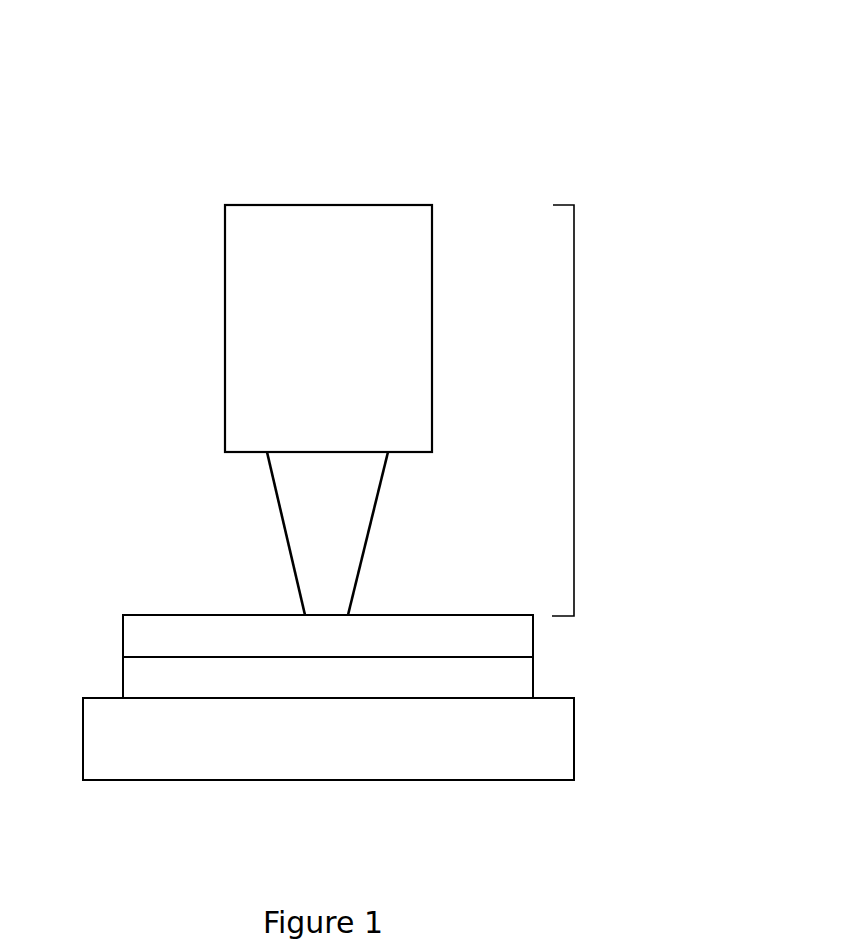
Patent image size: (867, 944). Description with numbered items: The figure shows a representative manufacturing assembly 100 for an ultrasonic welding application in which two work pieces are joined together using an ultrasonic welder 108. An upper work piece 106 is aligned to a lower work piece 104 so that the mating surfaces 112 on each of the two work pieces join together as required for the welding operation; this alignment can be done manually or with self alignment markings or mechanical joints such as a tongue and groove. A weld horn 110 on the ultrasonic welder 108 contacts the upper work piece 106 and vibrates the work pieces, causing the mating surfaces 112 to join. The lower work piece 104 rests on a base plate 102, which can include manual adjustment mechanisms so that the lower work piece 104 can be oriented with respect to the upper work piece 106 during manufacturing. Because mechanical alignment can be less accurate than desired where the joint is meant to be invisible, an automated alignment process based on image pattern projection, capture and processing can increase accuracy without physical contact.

The manufacturing assembly 100 is at (130, 76).
The base plate 102 is at (328, 739).
The lower work piece 104 is at (328, 677).
The upper work piece 106 is at (328, 636).
The ultrasonic welder 108 is at (574, 369).
The weld horn 110 is at (308, 513).
The mating surfaces 112 is at (557, 657).